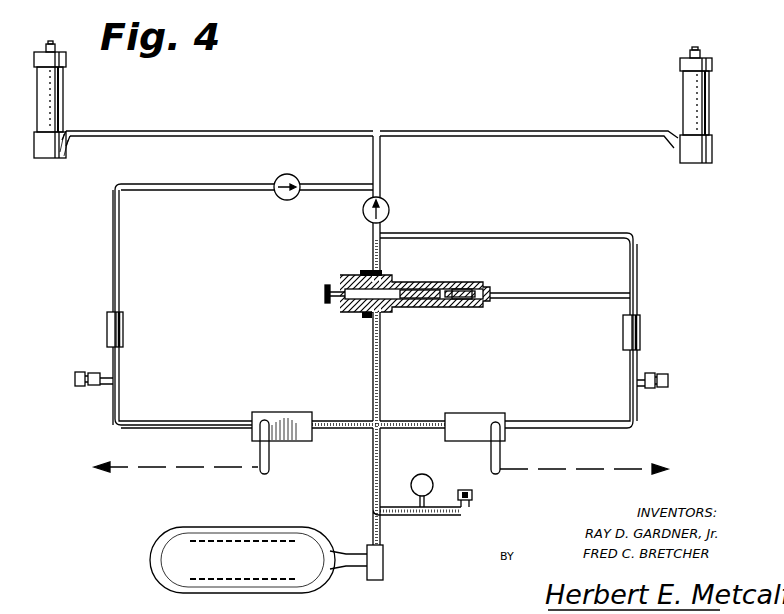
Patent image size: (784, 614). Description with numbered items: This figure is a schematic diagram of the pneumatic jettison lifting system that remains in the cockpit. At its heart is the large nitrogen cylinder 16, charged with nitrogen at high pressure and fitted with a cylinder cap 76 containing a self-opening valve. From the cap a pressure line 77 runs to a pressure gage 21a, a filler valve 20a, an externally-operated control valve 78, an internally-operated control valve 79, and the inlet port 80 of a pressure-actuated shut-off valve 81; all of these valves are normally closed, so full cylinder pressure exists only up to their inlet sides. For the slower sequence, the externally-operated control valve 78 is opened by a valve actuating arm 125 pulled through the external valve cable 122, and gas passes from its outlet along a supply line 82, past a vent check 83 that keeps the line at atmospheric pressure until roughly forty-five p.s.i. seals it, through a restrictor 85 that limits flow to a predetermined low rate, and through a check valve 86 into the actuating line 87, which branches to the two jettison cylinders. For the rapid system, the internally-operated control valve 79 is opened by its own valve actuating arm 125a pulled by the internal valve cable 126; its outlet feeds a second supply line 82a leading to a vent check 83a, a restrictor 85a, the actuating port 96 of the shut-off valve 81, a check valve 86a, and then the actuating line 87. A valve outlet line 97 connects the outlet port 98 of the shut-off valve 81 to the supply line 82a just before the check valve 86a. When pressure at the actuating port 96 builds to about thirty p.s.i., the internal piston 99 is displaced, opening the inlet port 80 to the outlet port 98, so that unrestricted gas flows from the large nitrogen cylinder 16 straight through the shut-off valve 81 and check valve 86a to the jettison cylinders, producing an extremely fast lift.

The large nitrogen cylinder 16 is at (150, 566).
The filler valve 20a is at (473, 494).
The pressure gage 21a is at (428, 477).
The cylinder cap 76 is at (383, 572).
The pressure line 77 is at (348, 370).
The externally-operated control valve 78 is at (290, 403).
The internally-operated control valve 79 is at (500, 402).
The inlet port 80 is at (366, 318).
The pressure-actuated shut-off valve 81 is at (438, 282).
The supply line 82 is at (120, 262).
The supply line 82a is at (590, 233).
The vent check 83 is at (80, 386).
The vent check 83a is at (672, 381).
The restrictor 85 is at (107, 324).
The restrictor 85a is at (642, 332).
The check valve 86 is at (276, 196).
The check valve 86a is at (389, 209).
The actuating line 87 is at (420, 130).
The actuating port 96 is at (488, 302).
The valve outlet line 97 is at (372, 240).
The outlet port 98 is at (368, 273).
The internal piston 99 is at (485, 268).
The external valve cable 122 is at (170, 468).
The valve actuating arm 125 is at (270, 463).
The valve actuating arm 125a is at (502, 465).
The internal valve cable 126 is at (556, 470).